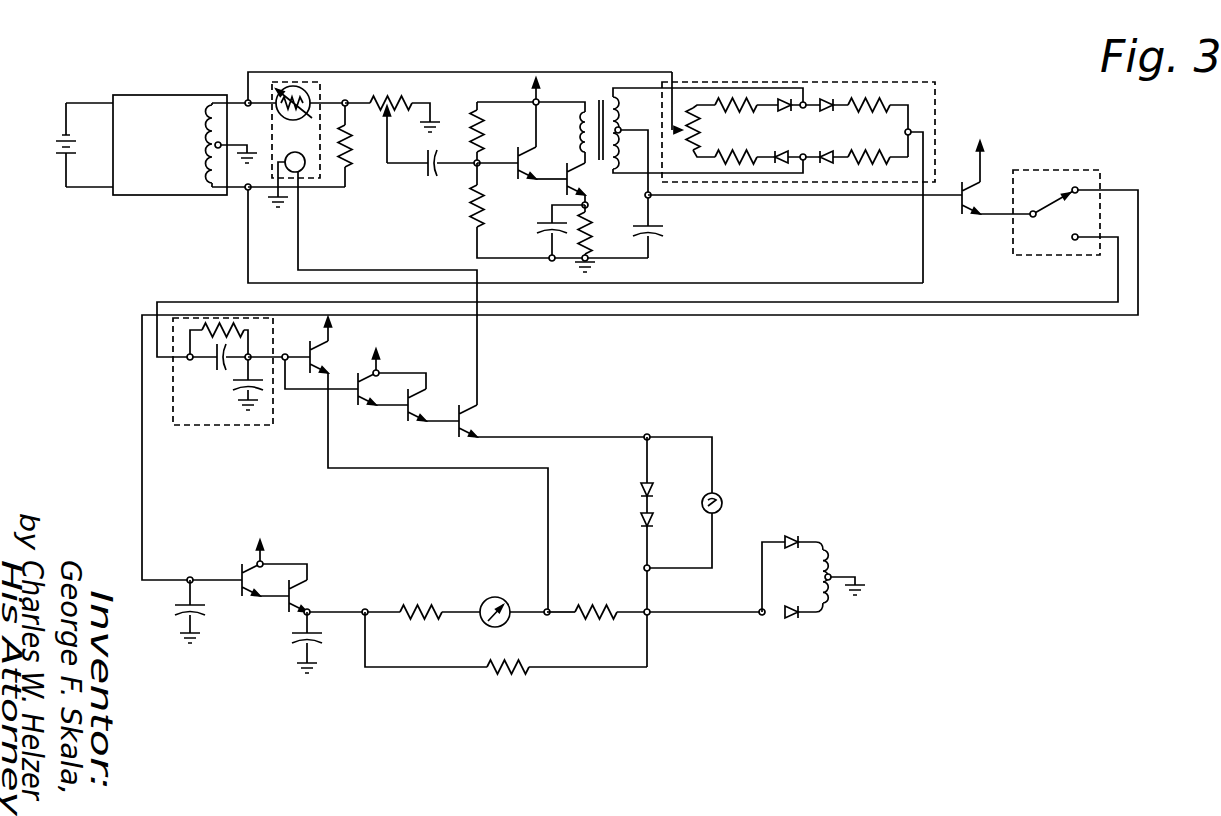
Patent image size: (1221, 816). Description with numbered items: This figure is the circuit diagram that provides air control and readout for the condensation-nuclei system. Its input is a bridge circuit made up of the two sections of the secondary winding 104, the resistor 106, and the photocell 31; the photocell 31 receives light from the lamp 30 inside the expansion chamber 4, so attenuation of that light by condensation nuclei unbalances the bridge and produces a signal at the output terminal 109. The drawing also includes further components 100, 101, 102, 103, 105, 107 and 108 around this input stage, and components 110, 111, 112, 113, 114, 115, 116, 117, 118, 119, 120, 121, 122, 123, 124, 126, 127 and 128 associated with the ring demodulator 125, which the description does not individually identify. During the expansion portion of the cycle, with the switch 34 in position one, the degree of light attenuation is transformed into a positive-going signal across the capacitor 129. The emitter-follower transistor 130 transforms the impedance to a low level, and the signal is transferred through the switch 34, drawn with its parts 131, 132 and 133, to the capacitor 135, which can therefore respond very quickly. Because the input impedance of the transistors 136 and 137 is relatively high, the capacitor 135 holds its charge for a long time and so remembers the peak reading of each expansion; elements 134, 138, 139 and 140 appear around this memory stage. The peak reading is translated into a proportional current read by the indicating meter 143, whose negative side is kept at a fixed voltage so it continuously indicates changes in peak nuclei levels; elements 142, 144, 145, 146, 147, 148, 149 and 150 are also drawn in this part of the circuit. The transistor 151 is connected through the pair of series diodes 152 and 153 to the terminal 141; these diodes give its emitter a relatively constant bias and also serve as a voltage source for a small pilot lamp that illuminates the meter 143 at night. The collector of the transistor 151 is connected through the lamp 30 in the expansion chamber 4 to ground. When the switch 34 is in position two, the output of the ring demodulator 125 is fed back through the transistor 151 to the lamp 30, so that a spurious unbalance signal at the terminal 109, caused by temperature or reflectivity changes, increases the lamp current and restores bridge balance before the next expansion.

The expansion chamber 4 is at (318, 100).
The lamp 30 is at (298, 149).
The photocell 31 is at (293, 86).
The switch 34 is at (1072, 170).
The battery 100 is at (60, 133).
The conductor 101 is at (88, 102).
The conductor 102 is at (98, 188).
The vibrator unit 103 is at (135, 95).
The secondary winding 104 is at (212, 108).
The center tap 105 is at (222, 144).
The resistor 106 is at (350, 172).
The terminal 107 is at (245, 100).
The terminal 108 is at (246, 190).
The output terminal 109 is at (348, 100).
The potentiometer tap 110 is at (402, 96).
The capacitor 111 is at (430, 178).
The transistor 112 is at (516, 157).
The emitter lead 113 is at (526, 181).
The resistor 114 is at (470, 110).
The resistor 115 is at (470, 212).
The transistor 116 is at (567, 166).
The primary winding 117 is at (580, 123).
The transformer 118 is at (599, 100).
The capacitor 119 is at (545, 234).
The resistor 120 is at (591, 238).
The secondary winding 121 is at (621, 112).
The secondary lead 122 is at (615, 174).
The diodes 123 is at (804, 103).
The diodes 124 is at (804, 159).
The ring demodulator 125 is at (918, 82).
The output junction 126 is at (911, 132).
The potentiometer 127 is at (682, 128).
The tap 128 is at (622, 129).
The capacitor 129 is at (655, 228).
The emitter-follower transistor 130 is at (958, 210).
The switch arm 131 is at (1037, 213).
The switch contact position 1 132 is at (1080, 188).
The switch contact position 2 133 is at (1078, 242).
The junction 134 is at (190, 577).
The capacitor 135 is at (176, 606).
The transistor 136 is at (241, 597).
The transistor 137 is at (288, 613).
The junction 138 is at (312, 608).
The capacitor 139 is at (319, 636).
The resistor 140 is at (510, 676).
The terminal 141 is at (650, 611).
The resistor 142 is at (420, 605).
The indicating meter 143 is at (484, 600).
The filter network 144 is at (217, 426).
The junction 145 is at (287, 355).
The transistor 146 is at (322, 352).
The junction 147 is at (549, 610).
The resistor 148 is at (600, 608).
The transistor 149 is at (357, 410).
The transistor 150 is at (404, 423).
The transistor 151 is at (456, 438).
The diode 152 is at (640, 490).
The diode 153 is at (640, 522).